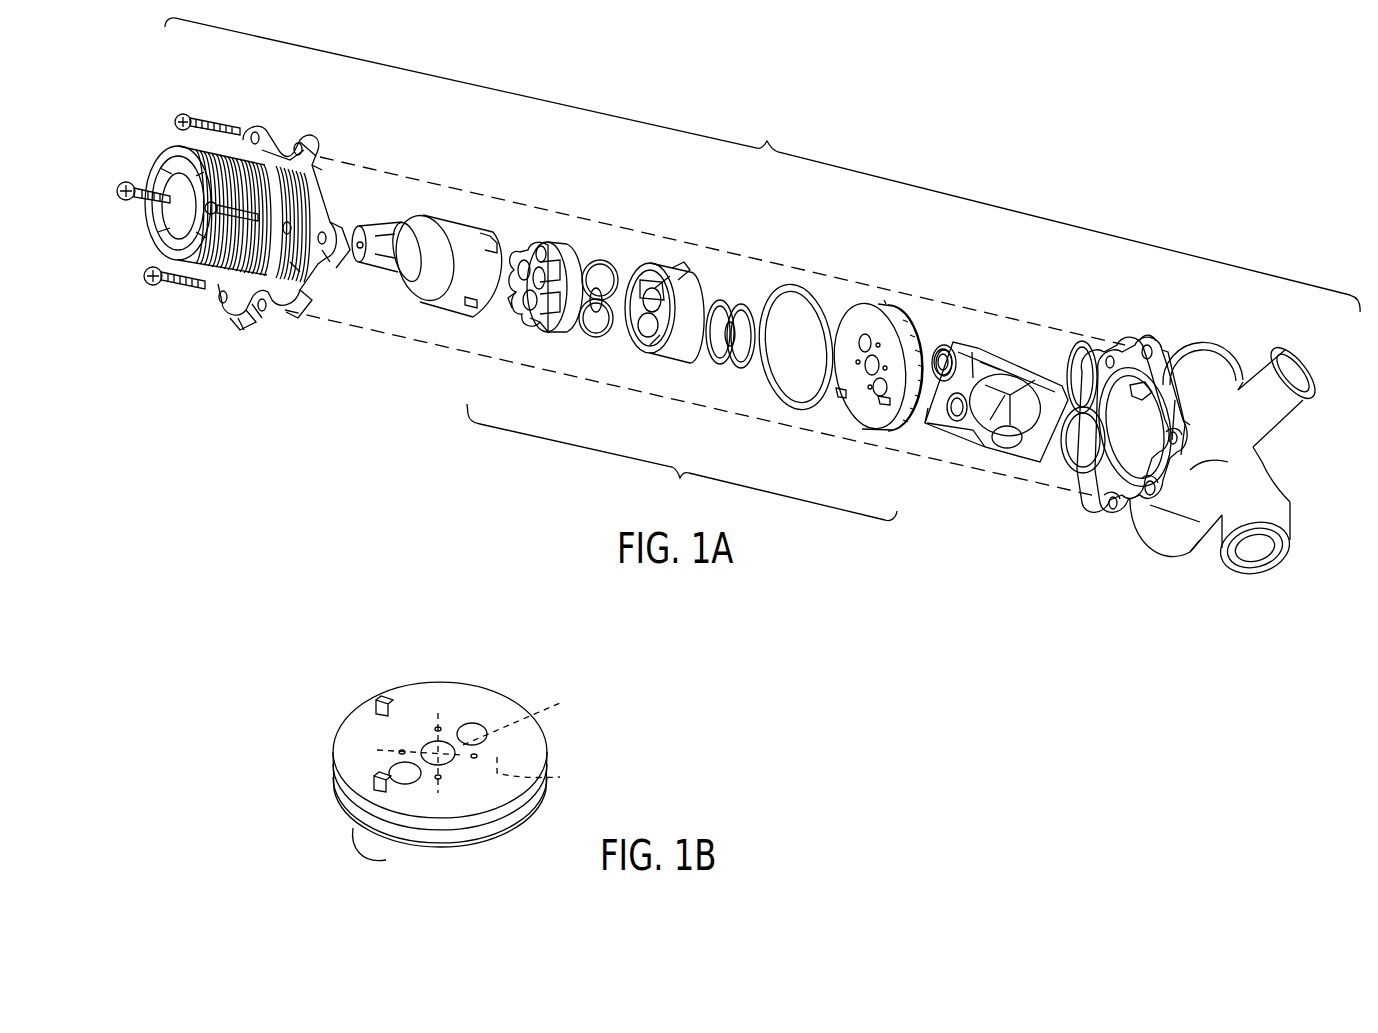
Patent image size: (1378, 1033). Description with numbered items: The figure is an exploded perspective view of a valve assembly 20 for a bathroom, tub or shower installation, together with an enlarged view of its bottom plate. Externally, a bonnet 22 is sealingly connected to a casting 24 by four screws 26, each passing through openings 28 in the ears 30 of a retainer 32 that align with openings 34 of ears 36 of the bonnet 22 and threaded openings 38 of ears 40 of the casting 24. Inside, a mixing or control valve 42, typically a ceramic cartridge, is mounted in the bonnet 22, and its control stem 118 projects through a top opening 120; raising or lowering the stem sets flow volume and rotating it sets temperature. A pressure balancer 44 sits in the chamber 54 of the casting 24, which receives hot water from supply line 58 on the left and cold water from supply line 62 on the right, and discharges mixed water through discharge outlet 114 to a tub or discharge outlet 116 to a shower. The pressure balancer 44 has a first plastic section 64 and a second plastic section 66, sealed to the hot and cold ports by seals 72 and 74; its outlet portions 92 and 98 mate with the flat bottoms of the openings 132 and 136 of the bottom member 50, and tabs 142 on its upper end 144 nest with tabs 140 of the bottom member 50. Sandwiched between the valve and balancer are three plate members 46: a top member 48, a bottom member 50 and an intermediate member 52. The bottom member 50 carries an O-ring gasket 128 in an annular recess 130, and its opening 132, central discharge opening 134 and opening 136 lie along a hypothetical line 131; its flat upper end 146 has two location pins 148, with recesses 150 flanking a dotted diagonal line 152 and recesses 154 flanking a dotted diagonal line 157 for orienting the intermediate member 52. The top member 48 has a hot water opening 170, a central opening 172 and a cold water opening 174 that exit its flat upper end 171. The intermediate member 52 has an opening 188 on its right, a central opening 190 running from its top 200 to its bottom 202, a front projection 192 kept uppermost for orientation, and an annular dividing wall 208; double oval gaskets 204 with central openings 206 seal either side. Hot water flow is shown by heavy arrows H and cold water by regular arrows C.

In FIG. 1A, the valve assembly 20 is at (762, 165).
In FIG. 1A, the bonnet 22 is at (338, 155).
In FIG. 1A, the casting 24 is at (1192, 569).
In FIG. 1A, the screws 26 is at (212, 130).
In FIG. 1A, the openings 28 is at (254, 133).
In FIG. 1A, the ears 30 is at (262, 143).
In FIG. 1A, the retainer 32 is at (278, 152).
In FIG. 1A, the openings 34 is at (290, 150).
In FIG. 1A, the ears 36 is at (310, 144).
In FIG. 1A, the threaded openings 38 is at (1108, 358).
In FIG. 1A, the ears 40 is at (1150, 338).
In FIG. 1A, the mixing or control valve 42 is at (458, 202).
In FIG. 1A, the pressure balancer 44 is at (1017, 340).
In FIG. 1A, the plate members 46 is at (682, 462).
In FIG. 1A, the top member 48 is at (565, 240).
In FIG. 1A, the bottom member 50 is at (876, 297).
In FIG. 1B, the bottom member 50 is at (403, 674).
In FIG. 1A, the intermediate member 52 is at (663, 265).
In FIG. 1A, the chamber 54 is at (1140, 456).
In FIG. 1A, the water supply line 58 is at (1283, 548).
In FIG. 1A, the water supply line 62 is at (1210, 336).
In FIG. 1A, the first plastic section 64 is at (928, 418).
In FIG. 1A, the second plastic section 66 is at (990, 350).
In FIG. 1A, the seal 72 is at (1062, 446).
In FIG. 1A, the seal 74 is at (1073, 362).
In FIG. 1A, the outlet portion 92 is at (945, 425).
In FIG. 1A, the outlet portion 98 is at (944, 348).
In FIG. 1A, the discharge outlet 114 is at (1302, 397).
In FIG. 1A, the discharge outlet 116 is at (1147, 545).
In FIG. 1A, the control stem 118 is at (376, 250).
In FIG. 1A, the top opening 120 is at (178, 208).
In FIG. 1A, the O-ring gasket 128 is at (794, 290).
In FIG. 1B, the annular recess 130 is at (495, 838).
In FIG. 1B, the hypothetical line 131 is at (553, 706).
In FIG. 1A, the opening 132 is at (882, 396).
In FIG. 1B, the opening 132 is at (405, 778).
In FIG. 1A, the central discharge opening 134 is at (876, 358).
In FIG. 1B, the central discharge opening 134 is at (448, 766).
In FIG. 1A, the opening 136 is at (862, 336).
In FIG. 1B, the opening 136 is at (478, 732).
In FIG. 1B, the tabs 140 is at (362, 845).
In FIG. 1A, the tabs 142 is at (950, 352).
In FIG. 1A, the upper end 144 is at (1083, 345).
In FIG. 1A, the upper end 146 is at (885, 300).
In FIG. 1A, the location pins 148 is at (842, 398).
In FIG. 1B, the location pins 148 is at (378, 703).
In FIG. 1A, the recesses 150 is at (888, 398).
In FIG. 1B, the recesses 150 is at (436, 729).
In FIG. 1B, the dotted diagonal line 152 is at (443, 713).
In FIG. 1B, the recesses 154 is at (398, 750).
In FIG. 1B, the dotted diagonal line 157 is at (546, 773).
In FIG. 1A, the hot water opening 170 is at (520, 300).
In FIG. 1A, the flat upper end 171 is at (537, 306).
In FIG. 1A, the central opening 172 is at (539, 250).
In FIG. 1A, the cold water opening 174 is at (522, 268).
In FIG. 1A, the opening 188 is at (655, 287).
In FIG. 1A, the central opening 190 is at (640, 326).
In FIG. 1A, the front projection 192 is at (680, 285).
In FIG. 1A, the top 200 is at (648, 275).
In FIG. 1A, the bottom 202 is at (690, 345).
In FIG. 1A, the double oval gaskets 204 is at (605, 270).
In FIG. 1A, the central opening 206 is at (590, 326).
In FIG. 1A, the annular dividing wall 208 is at (672, 275).
In FIG. 1A, the cold water arrows C is at (1193, 311).
In FIG. 1A, the hot water arrows H is at (1258, 556).